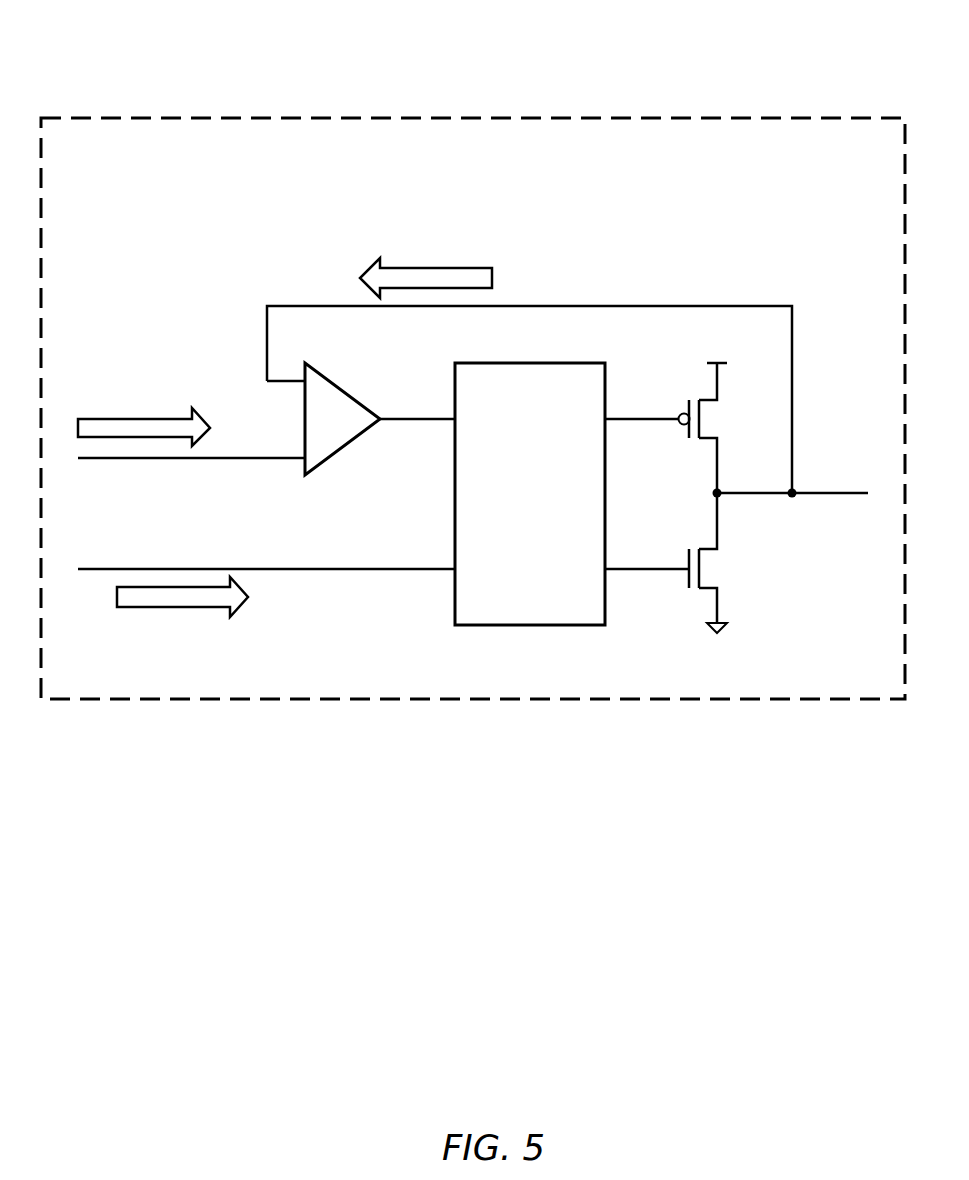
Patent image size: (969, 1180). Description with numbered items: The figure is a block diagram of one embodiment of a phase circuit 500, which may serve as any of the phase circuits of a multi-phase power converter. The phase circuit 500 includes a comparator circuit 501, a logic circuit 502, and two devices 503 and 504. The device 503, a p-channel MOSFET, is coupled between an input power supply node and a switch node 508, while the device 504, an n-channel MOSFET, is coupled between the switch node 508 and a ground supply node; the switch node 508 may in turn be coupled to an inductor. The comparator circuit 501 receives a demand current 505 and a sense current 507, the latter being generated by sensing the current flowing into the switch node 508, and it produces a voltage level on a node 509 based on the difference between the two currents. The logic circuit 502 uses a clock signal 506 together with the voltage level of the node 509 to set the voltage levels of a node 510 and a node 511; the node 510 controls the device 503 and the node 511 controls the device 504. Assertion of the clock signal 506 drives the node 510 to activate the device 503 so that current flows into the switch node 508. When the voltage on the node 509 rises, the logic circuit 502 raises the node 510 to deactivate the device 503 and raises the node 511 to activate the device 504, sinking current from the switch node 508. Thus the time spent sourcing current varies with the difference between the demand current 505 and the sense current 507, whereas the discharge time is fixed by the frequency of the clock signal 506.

The phase circuit 500 is at (550, 118).
The comparator circuit 501 is at (350, 443).
The logic circuit 502 is at (550, 527).
The device 503 is at (704, 418).
The device 504 is at (714, 572).
The demand current 505 is at (146, 419).
The clock signal 506 is at (175, 608).
The sense current 507 is at (437, 267).
The switch node 508 is at (843, 493).
The node 509 is at (417, 419).
The node 510 is at (644, 419).
The node 511 is at (650, 569).